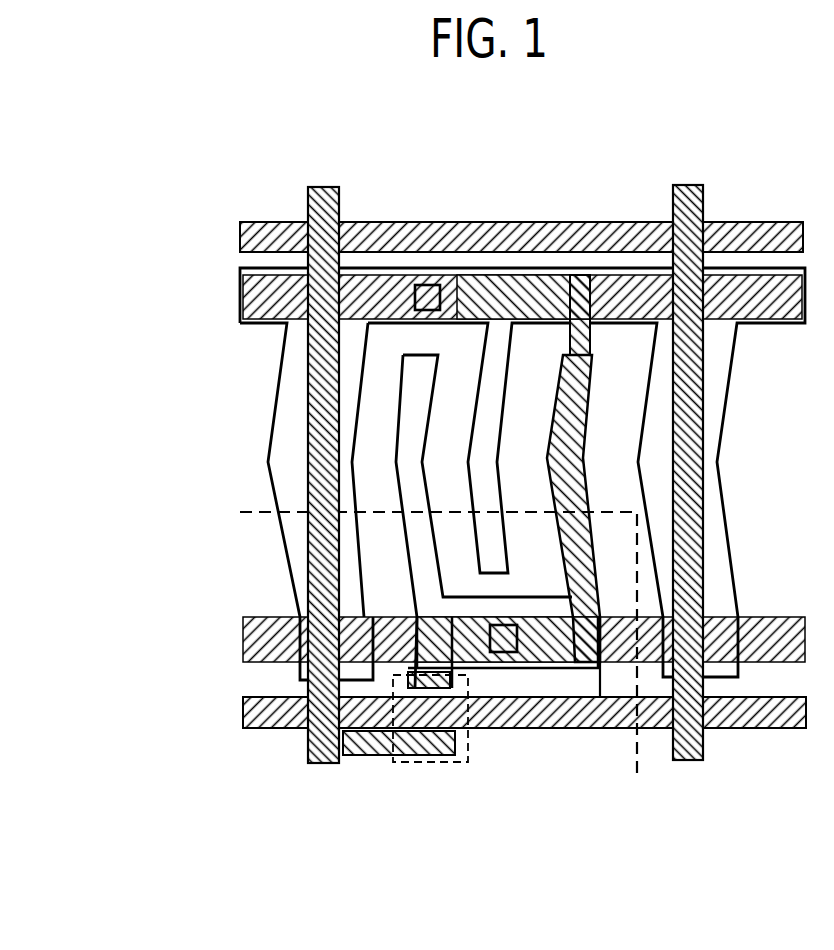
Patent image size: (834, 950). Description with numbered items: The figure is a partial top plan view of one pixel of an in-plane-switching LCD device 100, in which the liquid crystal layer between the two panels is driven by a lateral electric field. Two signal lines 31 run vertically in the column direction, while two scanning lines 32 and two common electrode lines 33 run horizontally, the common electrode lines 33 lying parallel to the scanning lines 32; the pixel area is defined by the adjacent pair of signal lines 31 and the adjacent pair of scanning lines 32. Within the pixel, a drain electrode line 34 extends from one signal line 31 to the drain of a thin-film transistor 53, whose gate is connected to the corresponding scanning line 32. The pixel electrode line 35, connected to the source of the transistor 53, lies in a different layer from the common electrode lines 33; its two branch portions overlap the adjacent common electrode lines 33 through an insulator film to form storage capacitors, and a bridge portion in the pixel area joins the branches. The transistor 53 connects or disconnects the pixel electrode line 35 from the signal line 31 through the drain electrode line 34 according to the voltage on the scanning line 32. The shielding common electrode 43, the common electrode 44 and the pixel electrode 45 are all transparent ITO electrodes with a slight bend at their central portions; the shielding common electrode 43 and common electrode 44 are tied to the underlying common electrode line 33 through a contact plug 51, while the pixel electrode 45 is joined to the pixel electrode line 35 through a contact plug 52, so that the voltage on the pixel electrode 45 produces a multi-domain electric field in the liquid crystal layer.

The LCD device 100 is at (135, 139).
The signal line 31 is at (321, 187).
The scanning line 32 is at (240, 237).
The common electrode line 33 is at (240, 290).
The drain electrode line 34 is at (358, 757).
The pixel electrode line 35 is at (591, 322).
The shielding common electrode 43 is at (283, 566).
The common electrode 44 is at (487, 470).
The pixel electrode 45 is at (404, 384).
The contact plug 51 is at (427, 285).
The contact plug 52 is at (500, 656).
The thin-film transistor 53 is at (418, 762).